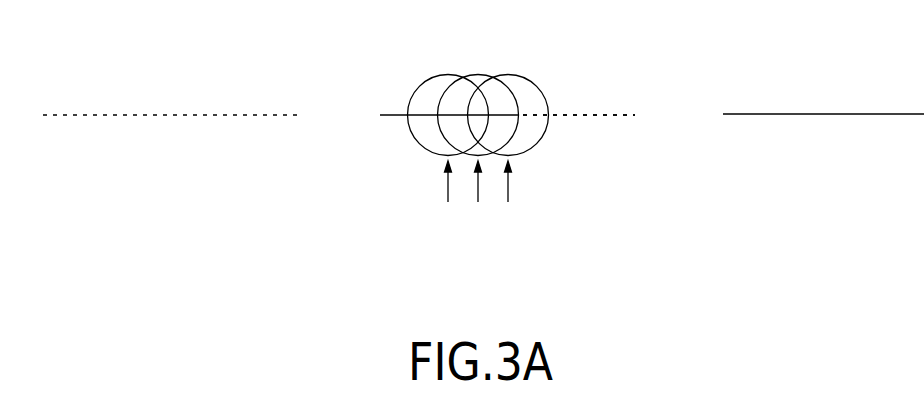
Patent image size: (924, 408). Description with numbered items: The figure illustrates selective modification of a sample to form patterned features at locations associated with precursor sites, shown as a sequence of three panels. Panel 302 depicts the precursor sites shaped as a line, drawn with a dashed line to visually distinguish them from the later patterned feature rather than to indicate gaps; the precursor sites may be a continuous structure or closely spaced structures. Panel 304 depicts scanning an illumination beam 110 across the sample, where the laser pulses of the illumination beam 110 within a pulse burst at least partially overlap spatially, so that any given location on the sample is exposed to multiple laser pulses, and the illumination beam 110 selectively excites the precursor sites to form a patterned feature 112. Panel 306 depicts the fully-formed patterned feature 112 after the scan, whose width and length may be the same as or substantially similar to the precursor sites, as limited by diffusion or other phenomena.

The panel 302 is at (188, 35).
The panel 304 is at (497, 35).
The panel 306 is at (847, 35).
The illumination beam 110 is at (478, 196).
The patterned feature 112 is at (827, 115).